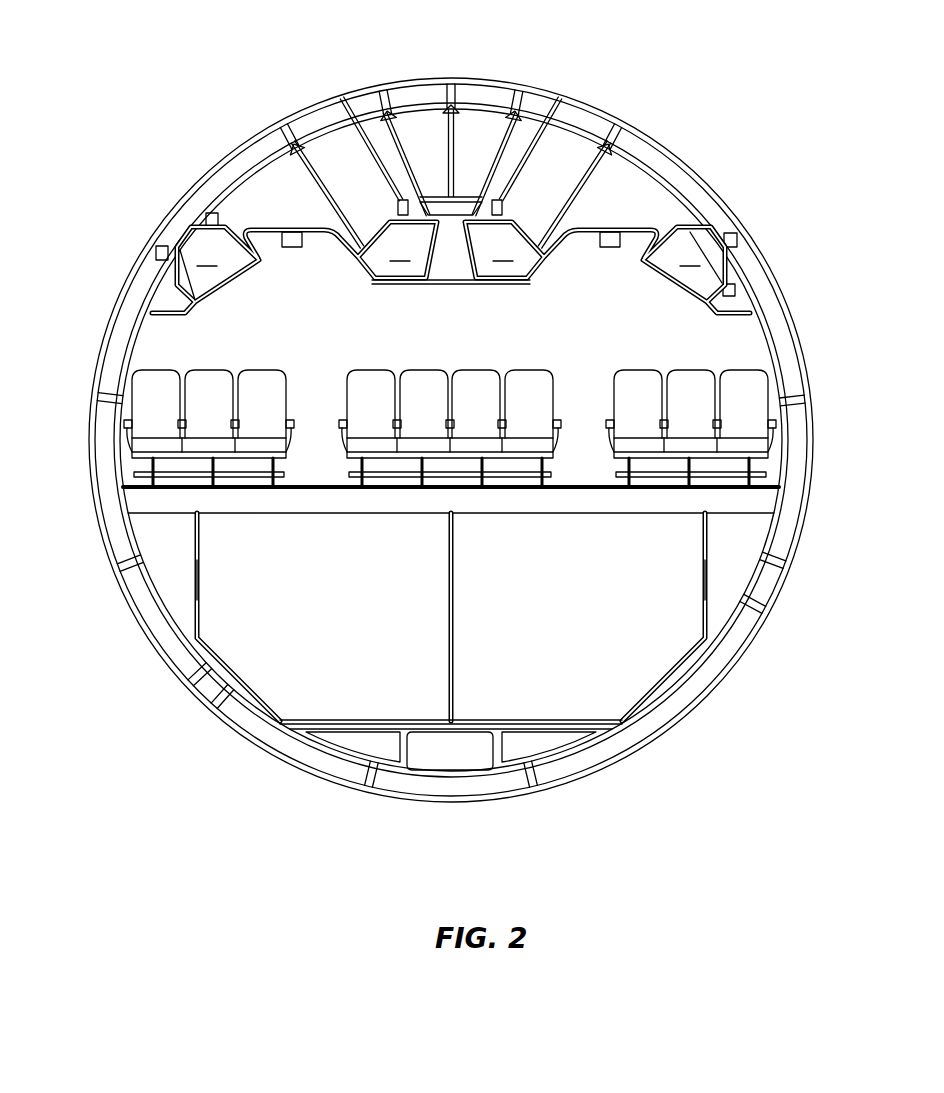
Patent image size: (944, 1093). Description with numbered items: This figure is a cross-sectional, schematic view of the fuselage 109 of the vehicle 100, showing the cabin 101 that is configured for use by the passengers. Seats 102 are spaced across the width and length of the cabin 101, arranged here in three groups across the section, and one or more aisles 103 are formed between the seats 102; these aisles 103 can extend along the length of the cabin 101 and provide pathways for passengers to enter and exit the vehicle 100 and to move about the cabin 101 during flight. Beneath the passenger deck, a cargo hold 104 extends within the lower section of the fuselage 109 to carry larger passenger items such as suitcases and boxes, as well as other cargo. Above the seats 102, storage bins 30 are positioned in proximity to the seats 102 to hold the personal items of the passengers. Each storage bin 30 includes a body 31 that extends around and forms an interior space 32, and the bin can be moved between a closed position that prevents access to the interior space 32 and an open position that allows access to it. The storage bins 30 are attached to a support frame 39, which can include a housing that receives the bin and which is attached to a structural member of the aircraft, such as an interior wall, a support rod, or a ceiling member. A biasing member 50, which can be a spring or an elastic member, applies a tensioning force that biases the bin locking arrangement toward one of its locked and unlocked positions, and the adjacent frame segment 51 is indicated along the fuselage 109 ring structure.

The vehicle 100 is at (160, 74).
The cabin 101 is at (212, 337).
The seats 102 is at (212, 386).
The aisles 103 is at (318, 437).
The cargo hold 104 is at (325, 618).
The fuselage 109 is at (765, 257).
The storage bins 30 is at (393, 240).
The body 31 is at (232, 293).
The interior space 32 is at (287, 127).
The support frame 39 is at (423, 210).
The biasing member 50 is at (288, 235).
The frame segment 51 is at (765, 600).